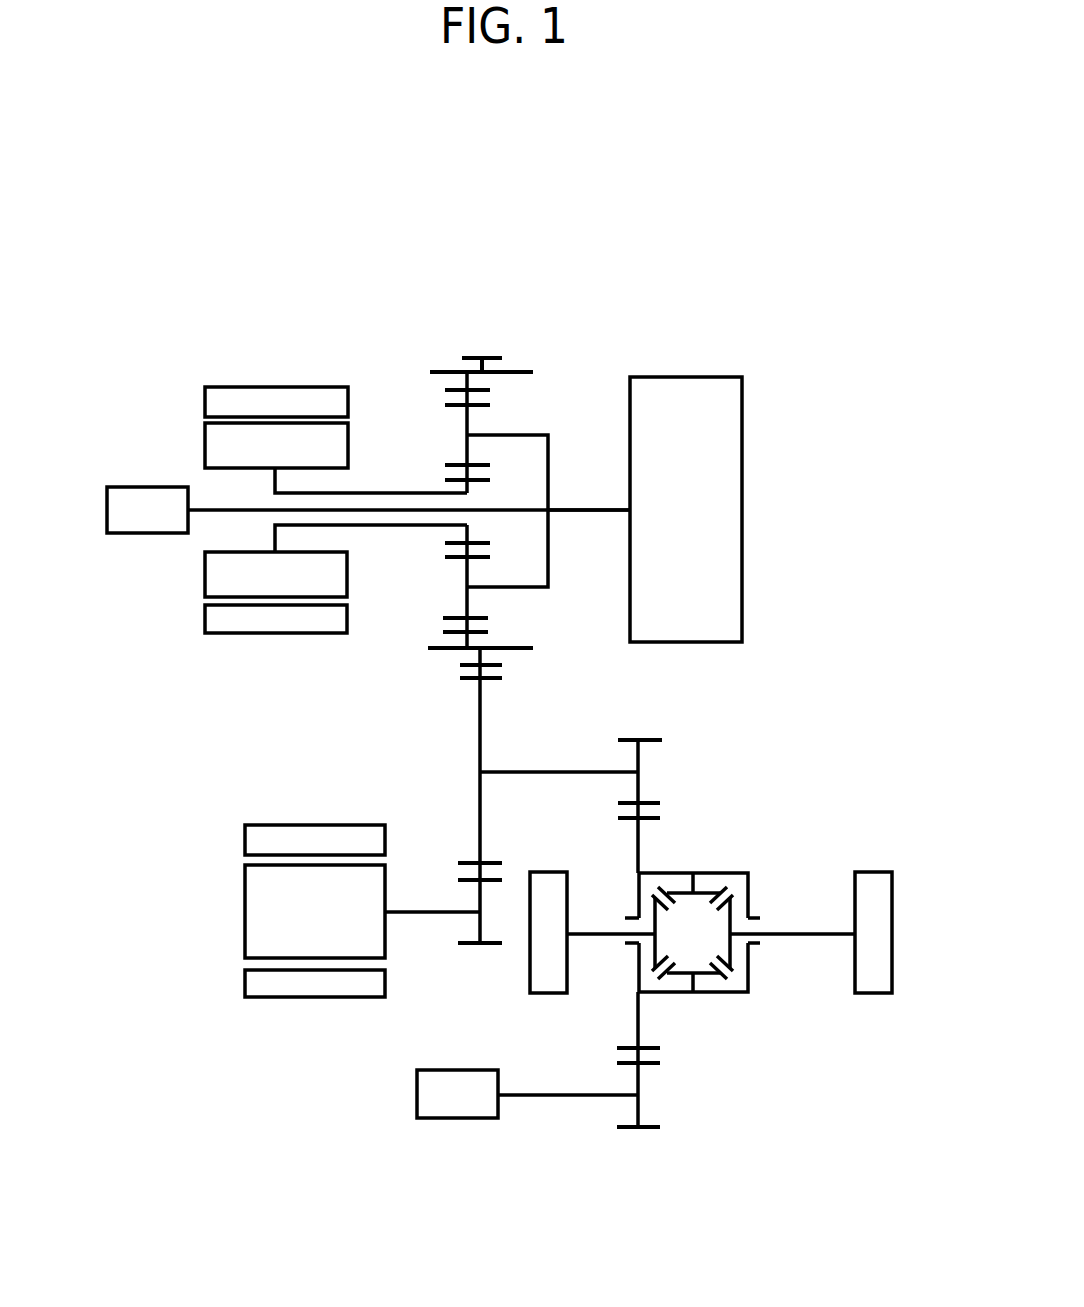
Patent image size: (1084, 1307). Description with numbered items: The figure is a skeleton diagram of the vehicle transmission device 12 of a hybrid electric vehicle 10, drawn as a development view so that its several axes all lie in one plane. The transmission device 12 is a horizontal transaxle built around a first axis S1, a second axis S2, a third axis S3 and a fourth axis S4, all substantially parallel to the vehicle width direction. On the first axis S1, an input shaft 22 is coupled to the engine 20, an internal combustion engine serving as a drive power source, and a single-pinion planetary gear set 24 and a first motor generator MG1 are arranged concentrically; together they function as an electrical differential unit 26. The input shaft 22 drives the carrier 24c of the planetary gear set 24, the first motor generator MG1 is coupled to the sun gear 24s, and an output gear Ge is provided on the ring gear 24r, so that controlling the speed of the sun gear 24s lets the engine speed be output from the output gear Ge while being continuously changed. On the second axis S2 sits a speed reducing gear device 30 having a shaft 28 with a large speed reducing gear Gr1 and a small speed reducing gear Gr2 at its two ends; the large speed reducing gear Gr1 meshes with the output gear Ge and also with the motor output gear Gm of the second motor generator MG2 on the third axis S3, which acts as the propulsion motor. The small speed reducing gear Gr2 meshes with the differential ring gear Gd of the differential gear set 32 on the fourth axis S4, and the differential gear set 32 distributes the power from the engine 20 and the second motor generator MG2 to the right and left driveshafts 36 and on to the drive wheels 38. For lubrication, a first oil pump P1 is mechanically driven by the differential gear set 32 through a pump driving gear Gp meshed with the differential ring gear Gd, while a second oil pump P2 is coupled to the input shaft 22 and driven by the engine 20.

The hybrid electric vehicle 10 is at (705, 225).
The vehicle transmission device 12 is at (285, 270).
The engine 20 is at (730, 450).
The input shaft 22 is at (588, 513).
The single-pinion planetary gear set 24 is at (392, 635).
The sun gear 24s is at (447, 480).
The carrier 24c is at (516, 433).
The ring gear 24r is at (487, 633).
The electrical differential unit 26 is at (507, 300).
The shaft 28 is at (547, 776).
The speed reducing gear device 30 is at (723, 757).
The differential gear set 32 is at (737, 1017).
The driveshafts 36 is at (597, 942).
The drive wheels 38 is at (545, 1003).
The output gear Ge is at (477, 358).
The large speed reducing gear Gr1 is at (498, 682).
The small speed reducing gear Gr2 is at (649, 740).
The differential ring gear Gd is at (653, 819).
The motor output gear Gm is at (475, 947).
The pump driving gear Gp is at (630, 1128).
The first axis S1 is at (346, 510).
The second axis S2 is at (456, 795).
The third axis S3 is at (341, 915).
The fourth axis S4 is at (918, 935).
The first oil pump P1 is at (527, 1094).
The second oil pump P2 is at (147, 510).
The first motor generator MG1 is at (336, 494).
The second motor generator MG2 is at (315, 896).